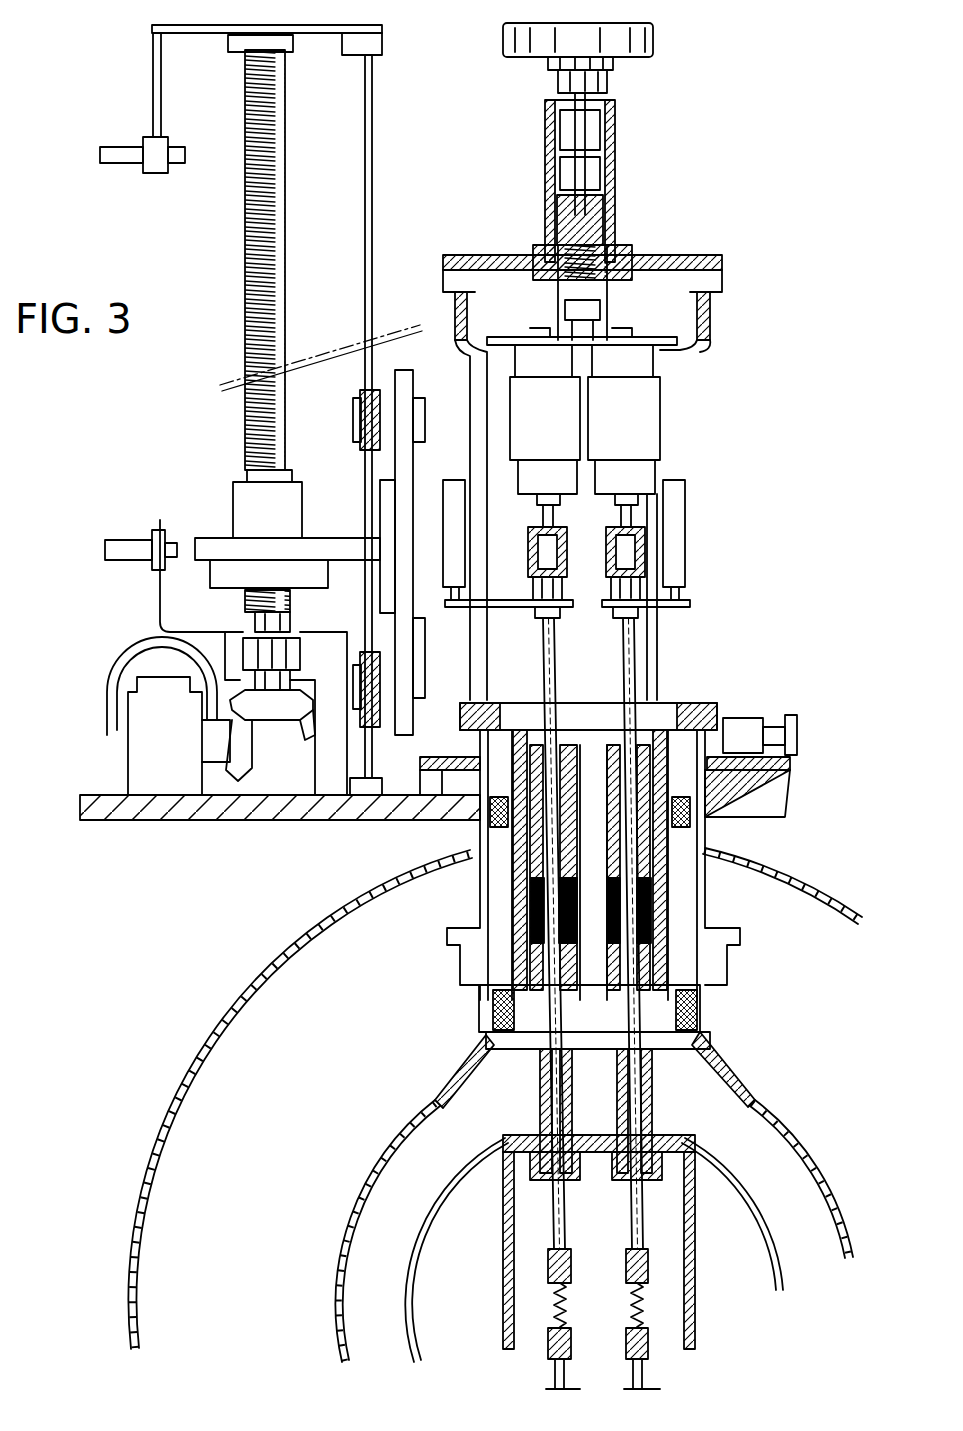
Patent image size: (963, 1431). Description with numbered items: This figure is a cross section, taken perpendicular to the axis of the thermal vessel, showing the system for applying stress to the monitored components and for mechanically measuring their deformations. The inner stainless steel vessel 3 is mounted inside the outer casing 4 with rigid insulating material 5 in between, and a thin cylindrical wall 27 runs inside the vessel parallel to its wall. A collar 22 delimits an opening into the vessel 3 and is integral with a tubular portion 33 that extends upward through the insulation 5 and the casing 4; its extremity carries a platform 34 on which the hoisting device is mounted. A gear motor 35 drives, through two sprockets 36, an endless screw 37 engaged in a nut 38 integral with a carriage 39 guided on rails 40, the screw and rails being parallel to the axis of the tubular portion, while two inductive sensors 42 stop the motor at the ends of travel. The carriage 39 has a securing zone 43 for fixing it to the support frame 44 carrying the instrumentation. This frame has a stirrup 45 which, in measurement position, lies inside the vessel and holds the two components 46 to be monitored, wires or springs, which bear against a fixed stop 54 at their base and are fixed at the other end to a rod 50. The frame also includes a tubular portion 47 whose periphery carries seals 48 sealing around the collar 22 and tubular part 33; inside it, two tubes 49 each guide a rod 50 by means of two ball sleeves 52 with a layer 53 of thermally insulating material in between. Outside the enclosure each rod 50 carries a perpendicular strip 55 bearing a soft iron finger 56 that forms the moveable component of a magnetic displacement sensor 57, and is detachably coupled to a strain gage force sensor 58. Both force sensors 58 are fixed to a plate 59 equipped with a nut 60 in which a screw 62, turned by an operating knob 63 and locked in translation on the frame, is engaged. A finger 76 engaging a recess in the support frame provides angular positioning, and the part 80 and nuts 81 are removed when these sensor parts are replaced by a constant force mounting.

The stainless steel vessel 3 is at (342, 1298).
The casing 4 is at (140, 1222).
The rigid insulating material 5 is at (245, 1155).
The collar 22 is at (693, 1042).
The cylindrical wall 27 is at (412, 1275).
The tubular portion 33 is at (705, 913).
The platform 34 is at (338, 806).
The gear motor 35 is at (142, 737).
The sprockets 36 is at (262, 745).
The endless screw 37 is at (245, 292).
The nut 38 is at (243, 508).
The carriage 39 is at (405, 468).
The rails 40 is at (366, 222).
The inductive sensors 42 is at (175, 162).
The securing zone 43 is at (432, 790).
The support frame 44 is at (740, 768).
The stirrup 45 is at (503, 1232).
The components to be monitored 46 is at (636, 1302).
The tubular portion 47 is at (701, 850).
The seals 48 is at (705, 830).
The tubes 49 is at (465, 868).
The rod 50 is at (590, 1022).
The ball sleeves 52 is at (531, 898).
The layer of thermally insulating material 53 is at (560, 650).
The fixed stop 54 is at (626, 1356).
The strip 55 is at (667, 602).
The finger 56 is at (678, 600).
The magnetic displacement sensor 57 is at (453, 503).
The force sensor 58 is at (572, 420).
The plate 59 is at (680, 338).
The nut 60 is at (620, 287).
The screw 62 is at (617, 213).
The operating knob 63 is at (653, 34).
The finger 76 is at (745, 718).
The part 80 is at (687, 252).
The nuts 81 is at (640, 532).